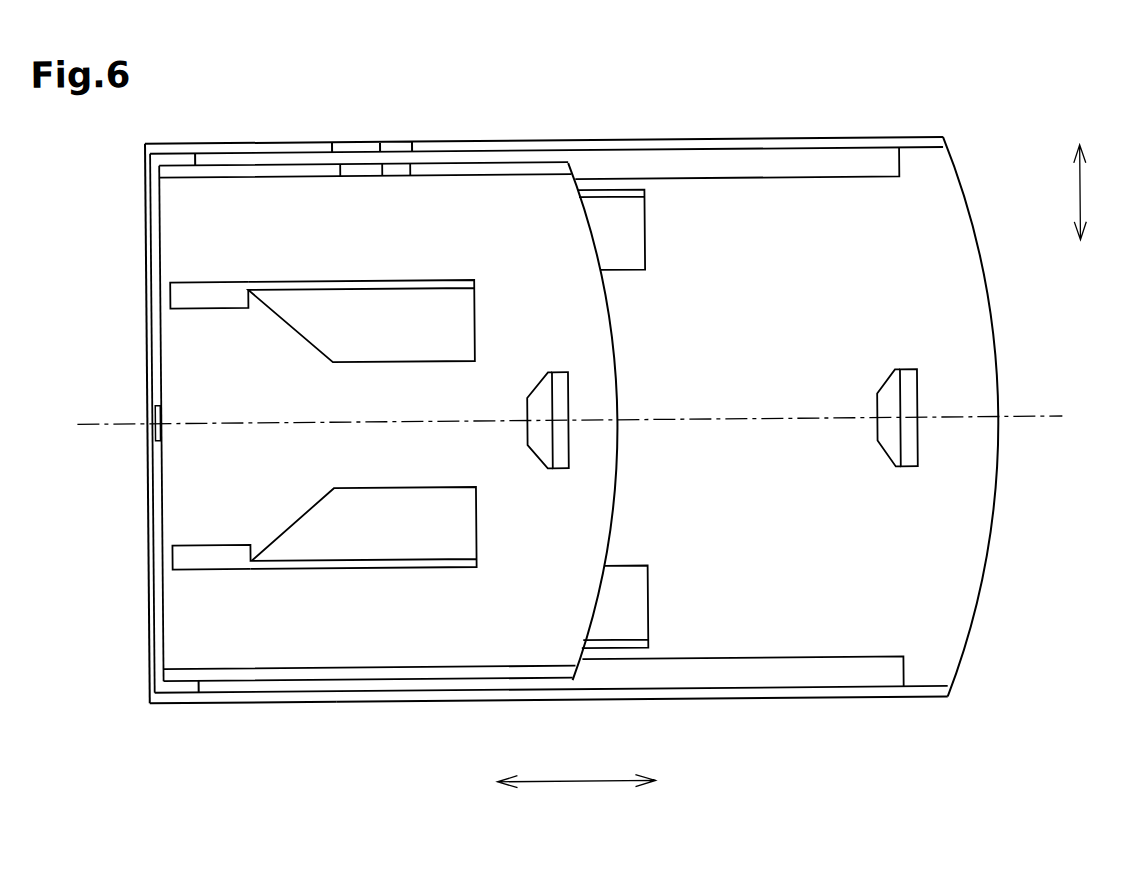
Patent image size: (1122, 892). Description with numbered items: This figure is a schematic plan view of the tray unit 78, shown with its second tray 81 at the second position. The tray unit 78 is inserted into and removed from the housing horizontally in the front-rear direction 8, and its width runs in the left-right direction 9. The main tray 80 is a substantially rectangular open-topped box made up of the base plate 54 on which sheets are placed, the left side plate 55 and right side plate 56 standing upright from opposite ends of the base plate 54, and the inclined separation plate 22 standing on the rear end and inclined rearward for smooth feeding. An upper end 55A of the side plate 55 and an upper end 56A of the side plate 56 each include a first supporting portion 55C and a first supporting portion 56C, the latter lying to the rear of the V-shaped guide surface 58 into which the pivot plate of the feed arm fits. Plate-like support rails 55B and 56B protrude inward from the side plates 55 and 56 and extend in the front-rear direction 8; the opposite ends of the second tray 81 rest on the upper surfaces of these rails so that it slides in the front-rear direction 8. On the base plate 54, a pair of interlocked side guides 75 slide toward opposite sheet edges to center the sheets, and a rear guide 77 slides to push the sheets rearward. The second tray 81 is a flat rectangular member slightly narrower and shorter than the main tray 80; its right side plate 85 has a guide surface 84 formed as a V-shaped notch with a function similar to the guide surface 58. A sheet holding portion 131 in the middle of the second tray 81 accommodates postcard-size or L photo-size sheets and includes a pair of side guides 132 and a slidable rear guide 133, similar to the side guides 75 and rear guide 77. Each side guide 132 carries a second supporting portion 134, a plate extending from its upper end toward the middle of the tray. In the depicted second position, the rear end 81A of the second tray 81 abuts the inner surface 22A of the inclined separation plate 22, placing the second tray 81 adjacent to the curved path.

The front-rear direction 8 is at (565, 785).
The left-right direction 9 is at (1078, 183).
The inclined separation plate 22 is at (145, 277).
The inner surface 22A is at (151, 332).
The base plate 54 is at (787, 366).
The left side plate 55 is at (838, 703).
The upper end 55A is at (772, 697).
The support rail 55B is at (783, 665).
The first supporting portion 55C is at (243, 703).
The right side plate 56 is at (838, 145).
The upper end 56A is at (780, 149).
The support rail 56B is at (782, 177).
The first supporting portion 56C is at (217, 143).
The guide surface 58 is at (358, 130).
The side guides 75 is at (644, 255).
The rear guide 77 is at (915, 406).
The tray unit 78 is at (149, 744).
The main tray 80 is at (995, 456).
The second tray 81 is at (610, 338).
The rear end 81A is at (158, 593).
The guide surface 84 is at (372, 184).
The right side plate 85 is at (493, 167).
The sheet holding portion 131 is at (230, 403).
The side guides 132 is at (294, 278).
The rear guide 133 is at (555, 375).
The second supporting portions 134 is at (196, 288).